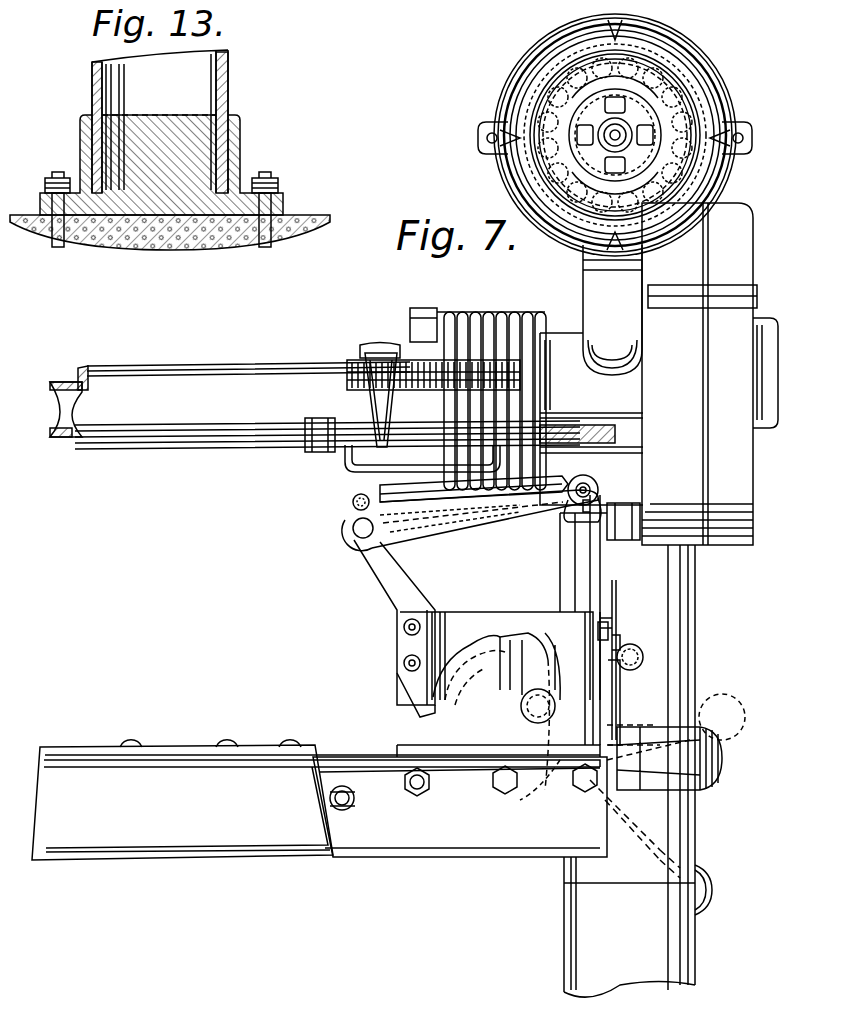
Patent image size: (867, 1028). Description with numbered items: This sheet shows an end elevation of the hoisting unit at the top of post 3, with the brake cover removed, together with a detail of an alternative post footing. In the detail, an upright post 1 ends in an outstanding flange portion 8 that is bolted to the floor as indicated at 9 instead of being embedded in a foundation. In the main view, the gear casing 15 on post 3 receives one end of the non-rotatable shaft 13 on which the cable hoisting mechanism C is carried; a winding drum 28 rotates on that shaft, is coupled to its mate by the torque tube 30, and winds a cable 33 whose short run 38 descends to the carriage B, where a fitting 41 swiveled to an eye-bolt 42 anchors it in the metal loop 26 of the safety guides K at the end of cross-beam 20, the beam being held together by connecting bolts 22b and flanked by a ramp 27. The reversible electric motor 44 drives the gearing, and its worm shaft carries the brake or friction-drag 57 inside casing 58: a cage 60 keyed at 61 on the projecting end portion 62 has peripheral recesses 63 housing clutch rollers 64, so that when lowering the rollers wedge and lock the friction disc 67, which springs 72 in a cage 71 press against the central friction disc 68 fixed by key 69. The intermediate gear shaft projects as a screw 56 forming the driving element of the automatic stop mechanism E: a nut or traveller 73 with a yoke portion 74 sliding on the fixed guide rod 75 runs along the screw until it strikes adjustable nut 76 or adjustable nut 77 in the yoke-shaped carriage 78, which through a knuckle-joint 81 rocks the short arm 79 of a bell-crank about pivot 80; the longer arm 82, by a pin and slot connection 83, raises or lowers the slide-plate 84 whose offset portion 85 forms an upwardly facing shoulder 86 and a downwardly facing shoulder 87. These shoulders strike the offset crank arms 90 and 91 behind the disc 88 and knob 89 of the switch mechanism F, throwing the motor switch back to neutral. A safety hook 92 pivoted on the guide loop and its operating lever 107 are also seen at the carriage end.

In FIG. 13, the upright post 1 is at (228, 88).
In FIG. 13, the outstanding flange portion 8 is at (240, 188).
In FIG. 13, the bolt securing the flange 9 is at (56, 178).
In FIG. 7, the upright post 3 is at (695, 975).
In FIG. 7, the non-rotatable shaft 13 is at (60, 384).
In FIG. 7, the gear casing 15 is at (700, 520).
In FIG. 7, the cross-beam 20 is at (398, 857).
In FIG. 7, the connecting bolt 22b is at (432, 798).
In FIG. 7, the metal loop 26 is at (722, 760).
In FIG. 7, the ramp 27 is at (158, 848).
In FIG. 7, the winding drum 28 is at (436, 315).
In FIG. 7, the torque tube 30 is at (86, 366).
In FIG. 7, the cable 33 is at (522, 318).
In FIG. 7, the short run of cable 38 is at (545, 602).
In FIG. 7, the fitting 41 is at (545, 628).
In FIG. 7, the eye-bolt 42 is at (536, 800).
In FIG. 7, the reversible electric motor 44 is at (510, 182).
In FIG. 7, the screw 56 is at (415, 362).
In FIG. 7, the brake or friction-drag 57 is at (700, 82).
In FIG. 7, the casing 58 is at (712, 96).
In FIG. 7, the cage 60 is at (535, 78).
In FIG. 7, the key 61 is at (510, 100).
In FIG. 7, the projecting end portion of worm shaft 62 is at (524, 92).
In FIG. 7, the peripheral recess 63 is at (588, 175).
In FIG. 7, the clutch roller 64 is at (625, 100).
In FIG. 7, the friction disc 67 is at (720, 92).
In FIG. 7, the central friction disc 68 is at (735, 98).
In FIG. 7, the key 69 is at (494, 126).
In FIG. 7, the cage 71 is at (556, 64).
In FIG. 7, the spring 72 is at (580, 46).
In FIG. 7, the nut or traveller 73 is at (372, 356).
In FIG. 7, the yoke portion 74 is at (378, 404).
In FIG. 7, the fixed guide rod 75 is at (380, 556).
In FIG. 7, the adjustable nut 76 is at (545, 420).
In FIG. 7, the adjustable nut 77 is at (330, 450).
In FIG. 7, the yoke-shaped carriage 78 is at (492, 520).
In FIG. 7, the short arm of bell-crank lever 79 is at (352, 508).
In FIG. 7, the pivot of bell-crank lever 80 is at (360, 530).
In FIG. 7, the knuckle-joint 81 is at (340, 500).
In FIG. 7, the longer arm of bell-crank 82 is at (520, 520).
In FIG. 7, the pin and slot connection 83 is at (620, 530).
In FIG. 7, the slide-plate 84 is at (618, 732).
In FIG. 7, the offset portion 85 is at (604, 612).
In FIG. 7, the upwardly facing shoulder 86 is at (603, 626).
In FIG. 7, the downwardly facing shoulder 87 is at (612, 632).
In FIG. 7, the disc 88 is at (618, 640).
In FIG. 7, the handle or knob 89 is at (645, 648).
In FIG. 7, the offset crank arm 90 is at (600, 630).
In FIG. 7, the offset crank arm 91 is at (605, 685).
In FIG. 7, the hook 92 is at (430, 700).
In FIG. 7, the operating lever 107 is at (555, 822).
In FIG. 7, the vertically movable carriage B is at (48, 746).
In FIG. 7, the cable hoisting mechanism C is at (108, 366).
In FIG. 7, the automatic stop mechanism E is at (440, 522).
In FIG. 7, the switch mechanism F is at (410, 708).
In FIG. 7, the safety guide K is at (728, 786).